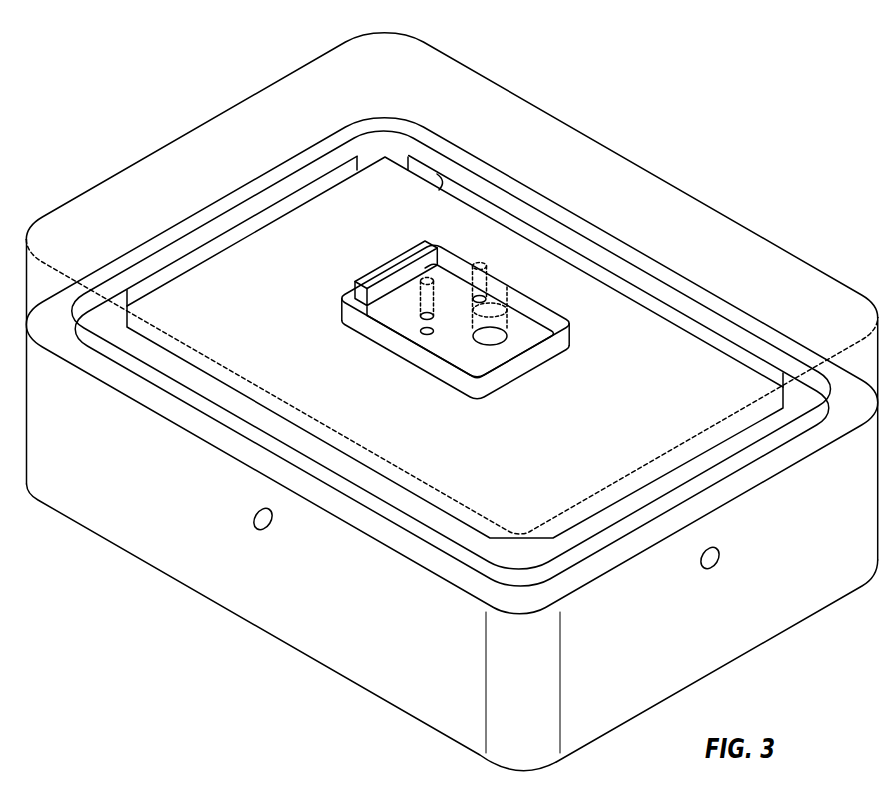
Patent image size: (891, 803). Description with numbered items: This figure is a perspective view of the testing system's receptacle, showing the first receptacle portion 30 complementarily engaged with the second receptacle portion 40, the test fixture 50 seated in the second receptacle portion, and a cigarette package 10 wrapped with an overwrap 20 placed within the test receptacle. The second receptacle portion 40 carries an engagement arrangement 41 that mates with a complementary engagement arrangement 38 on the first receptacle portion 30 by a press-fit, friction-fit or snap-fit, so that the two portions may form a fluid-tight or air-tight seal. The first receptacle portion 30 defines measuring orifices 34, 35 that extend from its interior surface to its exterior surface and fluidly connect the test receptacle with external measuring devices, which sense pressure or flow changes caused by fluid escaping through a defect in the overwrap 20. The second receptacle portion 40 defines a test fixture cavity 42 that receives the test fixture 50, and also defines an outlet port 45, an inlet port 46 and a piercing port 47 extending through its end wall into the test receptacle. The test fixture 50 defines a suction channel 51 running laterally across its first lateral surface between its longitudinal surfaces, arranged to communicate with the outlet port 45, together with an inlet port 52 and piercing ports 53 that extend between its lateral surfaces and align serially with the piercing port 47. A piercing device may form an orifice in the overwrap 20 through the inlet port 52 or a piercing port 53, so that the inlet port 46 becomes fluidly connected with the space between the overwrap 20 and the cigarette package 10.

The cigarette package 10 is at (183, 297).
The overwrap 20 is at (227, 284).
The first receptacle portion 30 is at (340, 612).
The measuring orifice 34 is at (718, 571).
The measuring orifice 35 is at (256, 531).
The complementary engagement arrangement 38 is at (737, 316).
The second receptacle portion 40 is at (265, 113).
The engagement arrangement 41 is at (727, 328).
The test fixture cavity 42 is at (333, 297).
The outlet port 45 is at (413, 258).
The inlet port 46 is at (512, 303).
The piercing port 47 is at (425, 297).
The test fixture 50 is at (505, 291).
The suction channel 51 is at (452, 274).
The inlet port 52 is at (513, 324).
The piercing port 53 is at (412, 336).